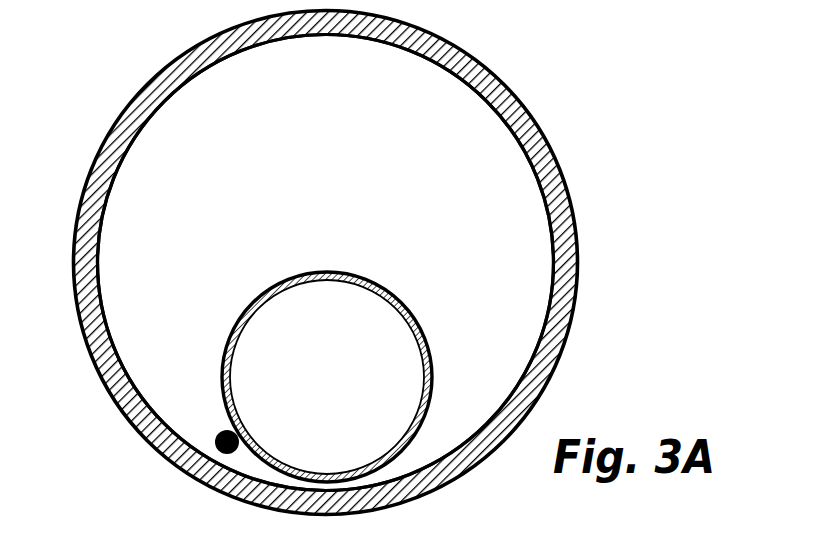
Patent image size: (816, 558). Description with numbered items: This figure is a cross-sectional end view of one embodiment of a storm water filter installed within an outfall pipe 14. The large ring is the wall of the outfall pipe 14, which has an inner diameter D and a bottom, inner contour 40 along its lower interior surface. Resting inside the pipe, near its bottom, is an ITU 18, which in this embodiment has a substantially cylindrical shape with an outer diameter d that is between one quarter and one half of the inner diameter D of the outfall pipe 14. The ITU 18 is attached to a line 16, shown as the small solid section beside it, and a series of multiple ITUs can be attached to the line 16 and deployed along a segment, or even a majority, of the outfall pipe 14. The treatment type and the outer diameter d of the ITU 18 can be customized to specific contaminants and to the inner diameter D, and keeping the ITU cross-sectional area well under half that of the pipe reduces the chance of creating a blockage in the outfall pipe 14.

The outfall pipe 14 is at (122, 117).
The line 16 is at (226, 432).
The ITU 18 is at (290, 280).
The bottom, inner contour 40 is at (481, 416).
The inner diameter D is at (478, 108).
The outer diameter d is at (406, 298).